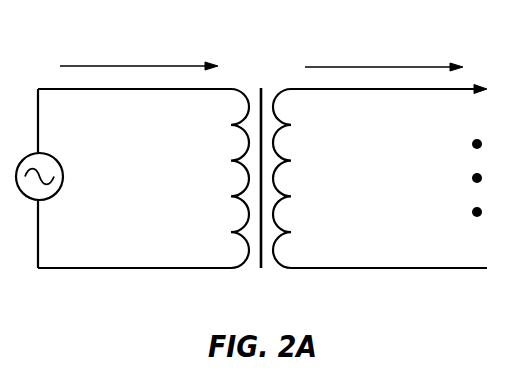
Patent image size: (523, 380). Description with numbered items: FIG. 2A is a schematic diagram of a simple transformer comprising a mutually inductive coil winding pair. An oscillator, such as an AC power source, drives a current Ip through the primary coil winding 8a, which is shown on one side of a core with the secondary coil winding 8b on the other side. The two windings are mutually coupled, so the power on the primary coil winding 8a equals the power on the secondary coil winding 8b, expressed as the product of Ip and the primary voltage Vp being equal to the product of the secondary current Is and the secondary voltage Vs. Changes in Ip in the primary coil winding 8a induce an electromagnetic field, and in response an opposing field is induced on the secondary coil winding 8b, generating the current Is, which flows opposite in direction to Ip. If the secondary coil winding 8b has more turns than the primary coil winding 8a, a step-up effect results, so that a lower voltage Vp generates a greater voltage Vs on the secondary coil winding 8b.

The primary coil winding 8a is at (243, 151).
The secondary coil winding 8b is at (280, 152).
The primary voltage Vp is at (84, 175).
The secondary voltage Vs is at (426, 175).
The primary current Ip is at (139, 48).
The secondary current Is is at (384, 48).